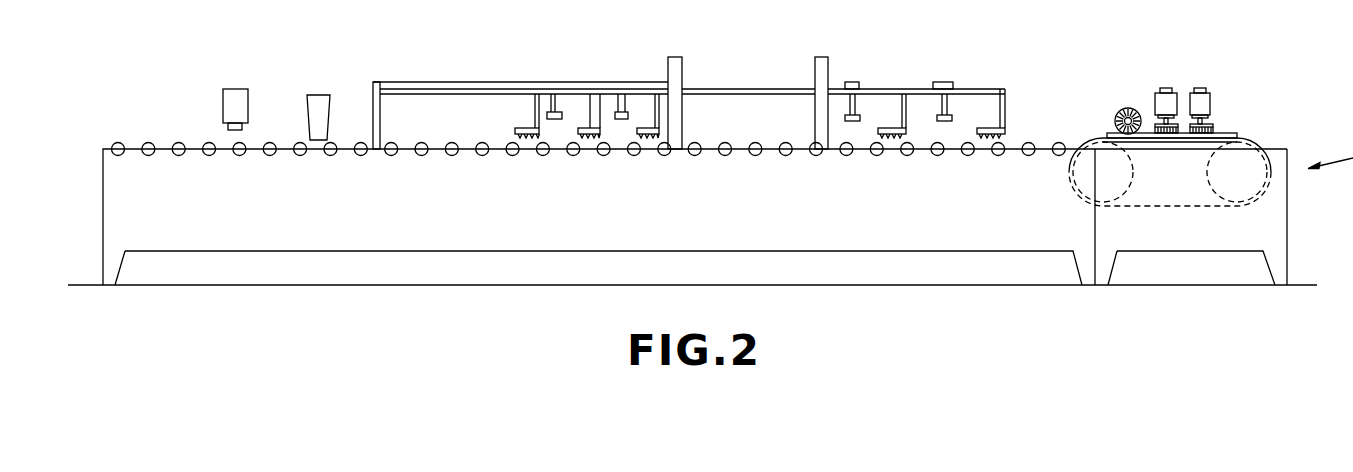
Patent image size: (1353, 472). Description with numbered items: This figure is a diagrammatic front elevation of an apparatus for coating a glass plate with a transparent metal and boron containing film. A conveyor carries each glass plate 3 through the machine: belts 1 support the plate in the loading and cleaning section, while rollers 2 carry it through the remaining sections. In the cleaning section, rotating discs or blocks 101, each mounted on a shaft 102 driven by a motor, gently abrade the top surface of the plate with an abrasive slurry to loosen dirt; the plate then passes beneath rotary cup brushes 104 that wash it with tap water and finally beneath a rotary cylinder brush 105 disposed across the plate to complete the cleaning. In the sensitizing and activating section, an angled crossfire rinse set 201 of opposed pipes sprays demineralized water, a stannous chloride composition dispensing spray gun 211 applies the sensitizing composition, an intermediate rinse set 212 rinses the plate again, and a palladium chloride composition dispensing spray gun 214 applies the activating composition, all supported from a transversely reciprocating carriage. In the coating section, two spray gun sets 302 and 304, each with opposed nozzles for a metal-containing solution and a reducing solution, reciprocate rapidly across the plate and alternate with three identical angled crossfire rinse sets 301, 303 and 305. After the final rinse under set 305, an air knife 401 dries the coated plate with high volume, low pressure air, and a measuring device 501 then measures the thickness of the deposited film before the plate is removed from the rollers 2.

The belts 1 is at (1262, 140).
The rollers 2 is at (420, 149).
The glass plates 3 is at (1107, 134).
The rotating discs or blocks 101 is at (1190, 106).
The shaft 102 is at (1208, 121).
The rotary cup brushes 104 is at (1156, 106).
The rotary cylinder brush 105 is at (1121, 109).
The angled crossfire rinse set 201 is at (995, 128).
The stannous chloride composition dispensing spray gun 211 is at (948, 116).
The intermediate rinse set 212 is at (900, 112).
The palladium chloride composition dispensing spray gun 214 is at (860, 118).
The angled crossfire rinse set 301 is at (648, 127).
The spray gun set 302 is at (628, 105).
The angled crossfire rinse set 303 is at (590, 100).
The spray gun set 304 is at (552, 98).
The angled crossfire rinse set 305 is at (536, 126).
The air knife 401 is at (318, 110).
The measuring device 501 is at (237, 105).